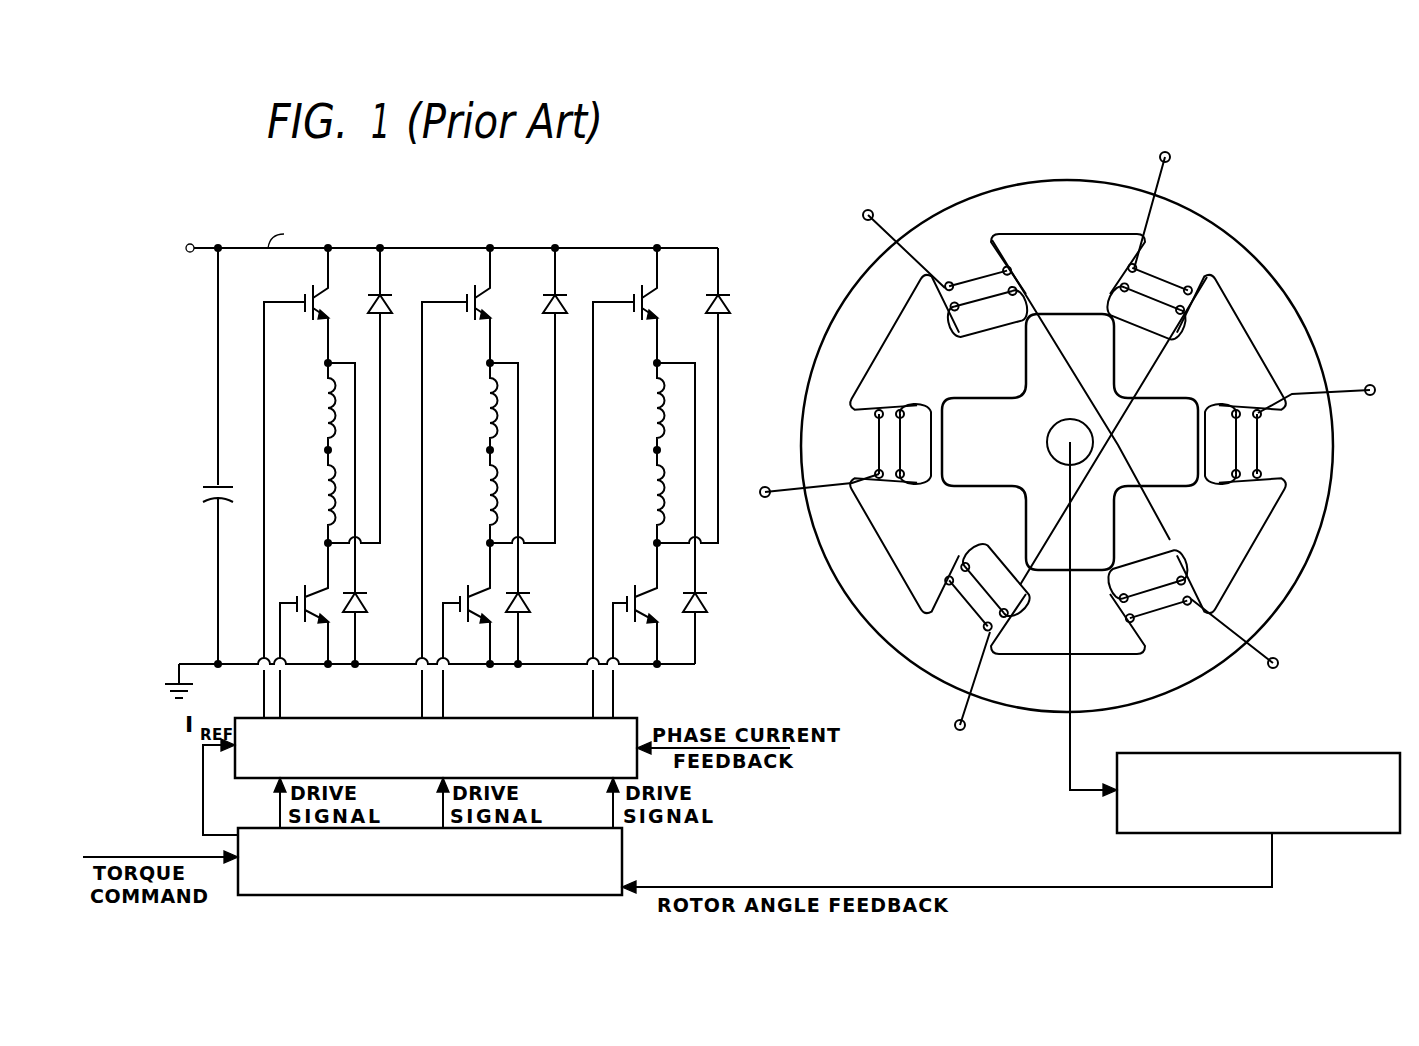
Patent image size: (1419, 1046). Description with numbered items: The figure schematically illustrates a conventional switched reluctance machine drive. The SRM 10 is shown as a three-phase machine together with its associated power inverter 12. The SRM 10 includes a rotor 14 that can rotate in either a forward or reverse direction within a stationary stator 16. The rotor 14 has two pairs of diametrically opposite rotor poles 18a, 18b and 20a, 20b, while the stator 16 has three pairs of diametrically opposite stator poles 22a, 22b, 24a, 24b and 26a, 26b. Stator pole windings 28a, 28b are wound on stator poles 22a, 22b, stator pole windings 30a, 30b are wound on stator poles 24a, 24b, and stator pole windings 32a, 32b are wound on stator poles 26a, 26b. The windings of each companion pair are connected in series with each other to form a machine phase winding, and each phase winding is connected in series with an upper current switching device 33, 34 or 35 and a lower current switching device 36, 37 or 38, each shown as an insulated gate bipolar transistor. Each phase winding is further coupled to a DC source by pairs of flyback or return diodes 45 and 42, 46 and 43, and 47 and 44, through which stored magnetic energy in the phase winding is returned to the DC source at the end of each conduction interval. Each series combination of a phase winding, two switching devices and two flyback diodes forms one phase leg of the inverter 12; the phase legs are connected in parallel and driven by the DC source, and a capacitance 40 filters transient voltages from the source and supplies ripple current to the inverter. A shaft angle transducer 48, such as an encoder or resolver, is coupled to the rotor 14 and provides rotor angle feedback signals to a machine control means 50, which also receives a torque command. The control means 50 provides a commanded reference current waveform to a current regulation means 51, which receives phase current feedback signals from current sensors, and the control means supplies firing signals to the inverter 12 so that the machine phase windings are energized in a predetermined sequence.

The switched reluctance machine 10 is at (1246, 202).
The power inverter 12 is at (583, 219).
The rotor 14 is at (1138, 476).
The stator 16 is at (860, 314).
The rotor pole 18a is at (948, 506).
The rotor pole 18b is at (1202, 381).
The rotor pole 20a is at (1070, 408).
The rotor pole 20b is at (1030, 606).
The stator pole 22a is at (912, 353).
The stator pole 22b is at (1271, 468).
The stator pole 24a is at (1057, 220).
The stator pole 24b is at (1115, 649).
The stator pole 26a is at (1249, 332).
The stator pole 26b is at (885, 541).
The stator pole winding 28a is at (325, 406).
The stator pole winding 28b is at (322, 482).
The stator pole winding 30a is at (487, 408).
The stator pole winding 30b is at (486, 482).
The stator pole winding 32a is at (656, 408).
The stator pole winding 32b is at (654, 482).
The upper current switching device 33 is at (310, 289).
The upper current switching device 34 is at (488, 290).
The upper current switching device 35 is at (651, 289).
The lower current switching device 36 is at (315, 590).
The lower current switching device 37 is at (484, 590).
The lower current switching device 38 is at (649, 590).
The capacitance 40 is at (205, 488).
The flyback diode 42 is at (368, 299).
The flyback diode 43 is at (552, 299).
The flyback diode 44 is at (726, 318).
The flyback diode 45 is at (354, 601).
The flyback diode 46 is at (525, 601).
The flyback diode 47 is at (702, 614).
The shaft angle transducer 48 is at (1338, 836).
The machine control means 50 is at (545, 897).
The current regulation means 51 is at (634, 718).